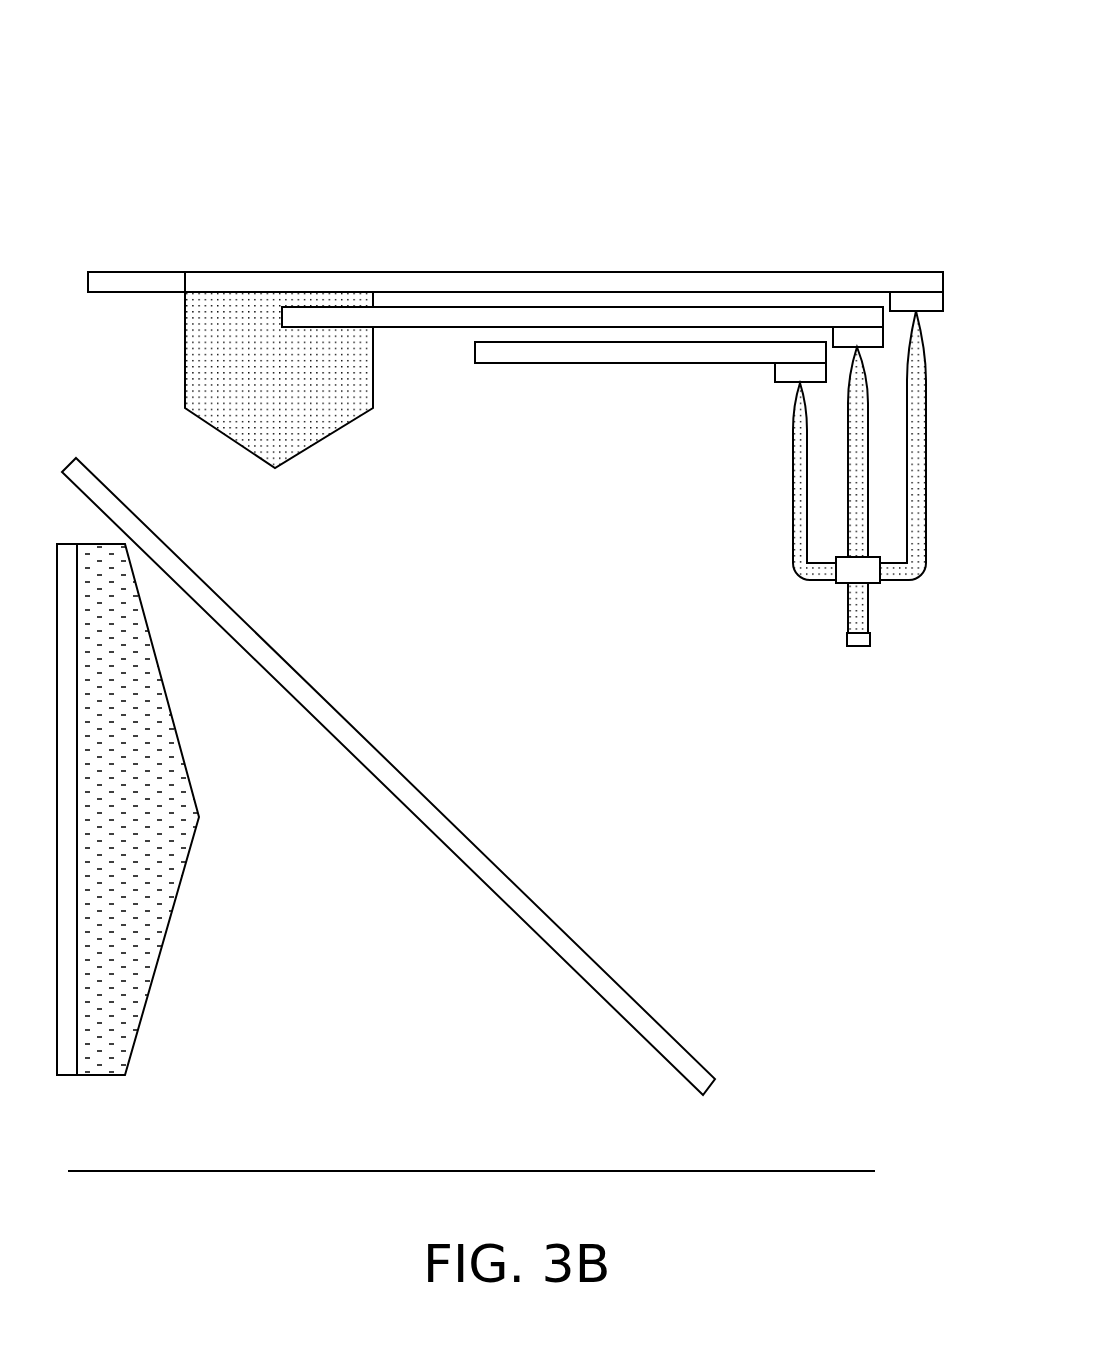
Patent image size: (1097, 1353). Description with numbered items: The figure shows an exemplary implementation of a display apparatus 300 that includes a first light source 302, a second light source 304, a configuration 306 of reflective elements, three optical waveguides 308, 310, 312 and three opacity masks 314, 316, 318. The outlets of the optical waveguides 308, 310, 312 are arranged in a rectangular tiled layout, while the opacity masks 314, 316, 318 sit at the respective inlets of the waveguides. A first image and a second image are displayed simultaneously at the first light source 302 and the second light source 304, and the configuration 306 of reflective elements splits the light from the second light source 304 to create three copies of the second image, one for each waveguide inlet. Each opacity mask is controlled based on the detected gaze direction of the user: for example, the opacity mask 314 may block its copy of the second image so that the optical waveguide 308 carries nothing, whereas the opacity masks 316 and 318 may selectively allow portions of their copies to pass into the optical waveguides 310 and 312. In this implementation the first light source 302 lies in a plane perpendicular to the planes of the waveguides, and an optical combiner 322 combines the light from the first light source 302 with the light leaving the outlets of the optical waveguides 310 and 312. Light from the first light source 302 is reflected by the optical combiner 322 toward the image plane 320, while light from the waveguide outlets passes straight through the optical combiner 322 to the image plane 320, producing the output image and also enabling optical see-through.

The display apparatus 300 is at (877, 75).
The first light source 302 is at (65, 1077).
The second light source 304 is at (872, 637).
The configuration of reflective elements 306 is at (843, 584).
The optical waveguide 308 is at (764, 348).
The optical waveguide 310 is at (816, 317).
The optical waveguide 312 is at (927, 277).
The opacity mask 314 is at (787, 372).
The opacity mask 316 is at (842, 335).
The opacity mask 318 is at (900, 302).
The image plane 320 is at (857, 1170).
The optical combiner 322 is at (700, 1070).